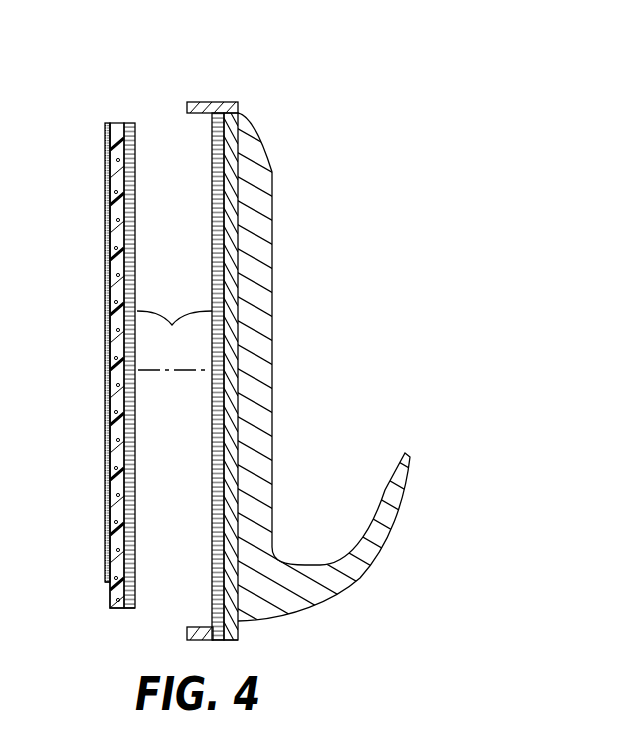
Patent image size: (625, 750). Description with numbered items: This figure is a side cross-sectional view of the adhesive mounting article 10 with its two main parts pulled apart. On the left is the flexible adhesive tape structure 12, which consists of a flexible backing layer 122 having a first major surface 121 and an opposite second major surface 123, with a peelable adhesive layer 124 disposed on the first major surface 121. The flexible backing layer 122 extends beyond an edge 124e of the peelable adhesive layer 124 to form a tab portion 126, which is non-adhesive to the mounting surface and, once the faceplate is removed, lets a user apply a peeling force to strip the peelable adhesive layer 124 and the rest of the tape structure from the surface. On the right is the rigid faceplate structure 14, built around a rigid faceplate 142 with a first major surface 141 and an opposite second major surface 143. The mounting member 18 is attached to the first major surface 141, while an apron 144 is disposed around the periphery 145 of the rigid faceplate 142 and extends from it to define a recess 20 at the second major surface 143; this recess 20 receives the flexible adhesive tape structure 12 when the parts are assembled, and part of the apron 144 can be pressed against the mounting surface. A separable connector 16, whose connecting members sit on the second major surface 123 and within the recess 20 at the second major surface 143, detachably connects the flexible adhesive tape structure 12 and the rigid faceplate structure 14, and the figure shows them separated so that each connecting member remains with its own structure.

The adhesive mounting article 10 is at (238, 40).
The flexible adhesive tape structure 12 is at (72, 326).
The first major surface 121 is at (107, 246).
The flexible backing layer 122 is at (113, 388).
The second major surface 123 is at (137, 287).
The peelable adhesive layer 124 is at (113, 445).
The edge of the peelable adhesive layer 124e is at (110, 583).
The tab portion 126 is at (110, 598).
The rigid faceplate structure 14 is at (288, 128).
The first major surface 141 is at (240, 111).
The rigid faceplate 142 is at (236, 160).
The second major surface 143 is at (208, 213).
The apron 144 is at (212, 638).
The periphery 145 is at (240, 641).
The separable connector 16 is at (174, 335).
The mounting member 18 is at (268, 298).
The recess 20 is at (186, 456).